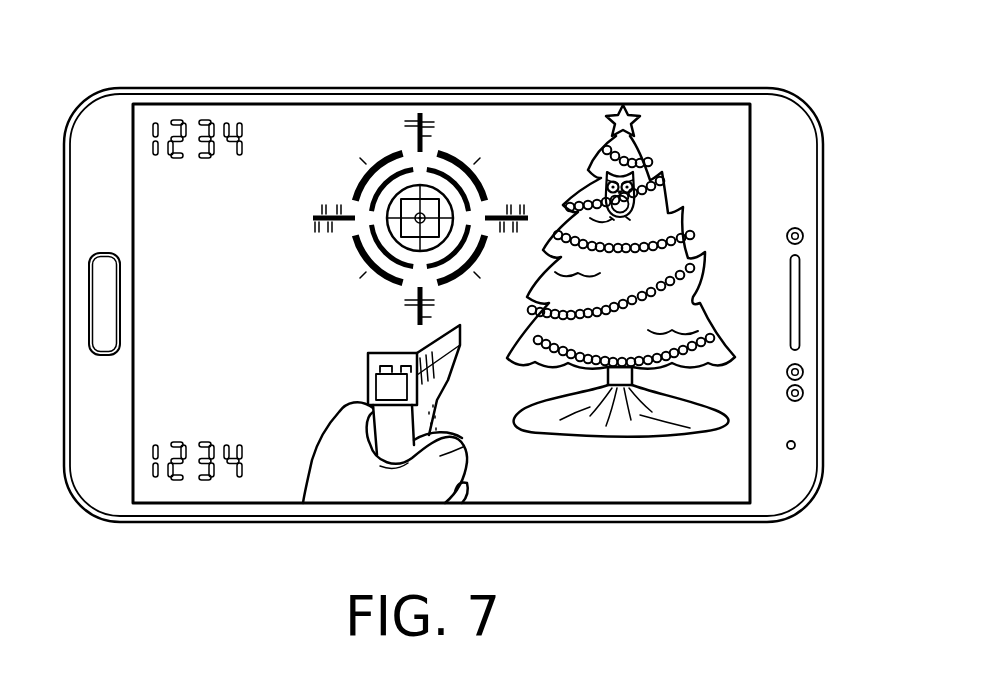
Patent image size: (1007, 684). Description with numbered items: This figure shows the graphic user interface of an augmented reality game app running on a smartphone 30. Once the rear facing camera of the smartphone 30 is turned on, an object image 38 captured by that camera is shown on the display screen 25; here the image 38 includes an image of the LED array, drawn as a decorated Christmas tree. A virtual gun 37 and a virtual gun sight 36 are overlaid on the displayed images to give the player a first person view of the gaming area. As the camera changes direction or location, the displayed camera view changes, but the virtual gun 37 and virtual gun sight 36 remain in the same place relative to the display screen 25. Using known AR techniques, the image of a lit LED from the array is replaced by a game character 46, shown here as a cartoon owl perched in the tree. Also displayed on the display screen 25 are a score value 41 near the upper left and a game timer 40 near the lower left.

The smartphone 30 is at (646, 88).
The display screen 25 is at (727, 486).
The score value 41 is at (137, 133).
The game timer 40 is at (137, 471).
The virtual gun sight 36 is at (497, 170).
The virtual gun 37 is at (333, 395).
The object image 38 is at (708, 266).
The game character 46 is at (645, 214).